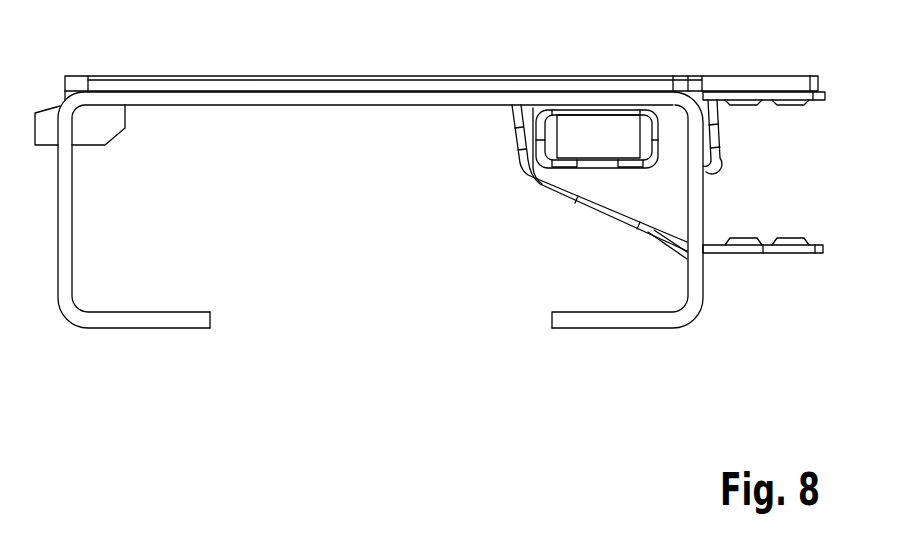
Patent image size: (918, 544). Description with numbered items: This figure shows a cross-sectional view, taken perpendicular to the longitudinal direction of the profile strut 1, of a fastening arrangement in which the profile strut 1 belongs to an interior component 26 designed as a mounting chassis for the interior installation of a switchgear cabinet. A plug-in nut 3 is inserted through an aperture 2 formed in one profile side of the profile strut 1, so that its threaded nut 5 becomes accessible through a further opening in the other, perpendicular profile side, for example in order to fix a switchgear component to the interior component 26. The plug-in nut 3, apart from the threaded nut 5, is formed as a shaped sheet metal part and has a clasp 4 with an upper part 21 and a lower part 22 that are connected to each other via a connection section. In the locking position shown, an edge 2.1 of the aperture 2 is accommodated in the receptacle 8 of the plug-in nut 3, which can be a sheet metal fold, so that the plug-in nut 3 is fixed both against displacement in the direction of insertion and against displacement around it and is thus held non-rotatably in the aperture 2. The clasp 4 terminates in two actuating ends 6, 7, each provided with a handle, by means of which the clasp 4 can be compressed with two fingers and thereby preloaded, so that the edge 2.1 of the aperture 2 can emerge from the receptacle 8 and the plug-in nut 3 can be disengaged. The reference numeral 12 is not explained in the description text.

The profile strut 1 is at (98, 322).
The aperture 2 is at (671, 210).
The edge of the aperture 2.1 is at (695, 157).
The plug-in nut 3 is at (568, 145).
The clasp 4 is at (556, 206).
The threaded nut 5 is at (607, 130).
The actuating end 6 is at (815, 103).
The actuating end 7 is at (817, 255).
The receptacle 8 is at (720, 160).
The outer wall 12 is at (716, 285).
The upper part 21 is at (572, 108).
The lower part 22 is at (600, 212).
The interior component 26 is at (532, 87).